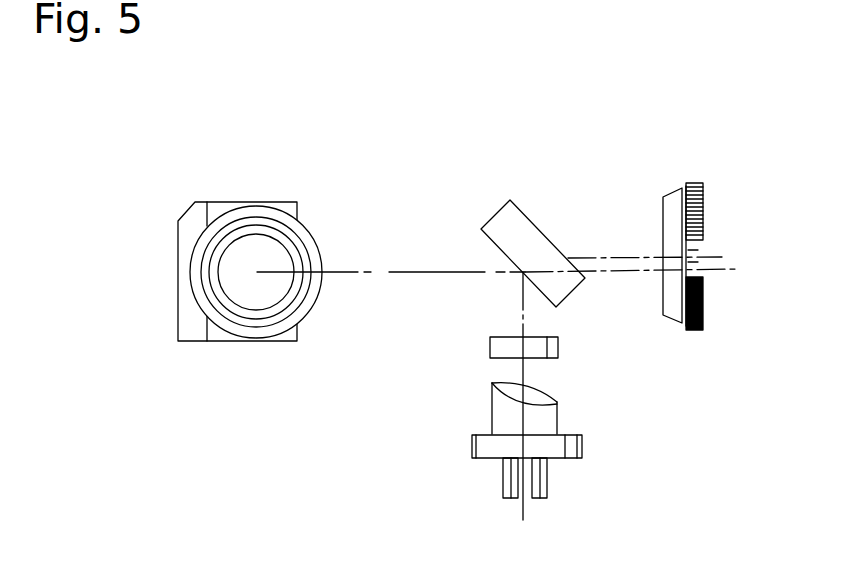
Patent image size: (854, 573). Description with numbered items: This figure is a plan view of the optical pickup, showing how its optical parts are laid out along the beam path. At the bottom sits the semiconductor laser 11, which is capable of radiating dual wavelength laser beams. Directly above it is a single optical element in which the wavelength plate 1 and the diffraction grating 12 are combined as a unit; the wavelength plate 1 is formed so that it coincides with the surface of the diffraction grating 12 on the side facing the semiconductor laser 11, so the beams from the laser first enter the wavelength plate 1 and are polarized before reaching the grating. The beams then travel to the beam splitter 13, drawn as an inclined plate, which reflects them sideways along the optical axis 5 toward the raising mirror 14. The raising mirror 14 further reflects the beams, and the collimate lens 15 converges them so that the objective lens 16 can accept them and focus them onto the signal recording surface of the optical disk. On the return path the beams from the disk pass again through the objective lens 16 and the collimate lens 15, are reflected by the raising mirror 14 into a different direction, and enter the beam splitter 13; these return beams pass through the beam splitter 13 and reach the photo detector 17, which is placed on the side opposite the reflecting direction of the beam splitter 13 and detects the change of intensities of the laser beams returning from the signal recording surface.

The wavelength plate 1 is at (513, 358).
The optical axis 5 is at (423, 272).
The semiconductor laser 11 is at (582, 447).
The diffraction grating 12 is at (558, 343).
The beam splitter 13 is at (530, 222).
The raising mirror 14 is at (185, 315).
The collimate lens 15 is at (290, 328).
The objective lens 16 is at (305, 295).
The photo detector 17 is at (682, 187).